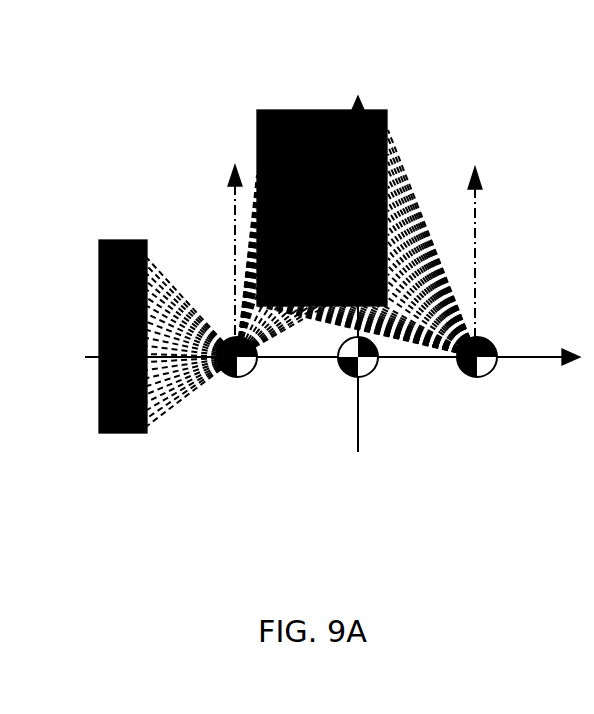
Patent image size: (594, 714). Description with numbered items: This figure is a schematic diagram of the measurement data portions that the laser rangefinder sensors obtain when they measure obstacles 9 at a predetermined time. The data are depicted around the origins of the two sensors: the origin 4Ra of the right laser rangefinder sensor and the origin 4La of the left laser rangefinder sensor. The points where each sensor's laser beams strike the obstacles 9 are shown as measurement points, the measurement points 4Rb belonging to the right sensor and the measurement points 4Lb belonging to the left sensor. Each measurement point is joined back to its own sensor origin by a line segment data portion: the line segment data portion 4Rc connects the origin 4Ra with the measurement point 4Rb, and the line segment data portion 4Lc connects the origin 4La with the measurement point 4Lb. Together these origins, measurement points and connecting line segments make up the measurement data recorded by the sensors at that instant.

The obstacle 9 is at (117, 242).
The origin of left laser rangefinder sensor 4La is at (233, 377).
The measurement point of left laser rangefinder sensor 4Lb is at (145, 245).
The line segment data portion of left sensor 4Lc is at (165, 262).
The origin of right laser rangefinder sensor 4Ra is at (466, 372).
The measurement point of right laser rangefinder sensor 4Rb is at (388, 128).
The line segment data portion of right sensor 4Rc is at (412, 193).